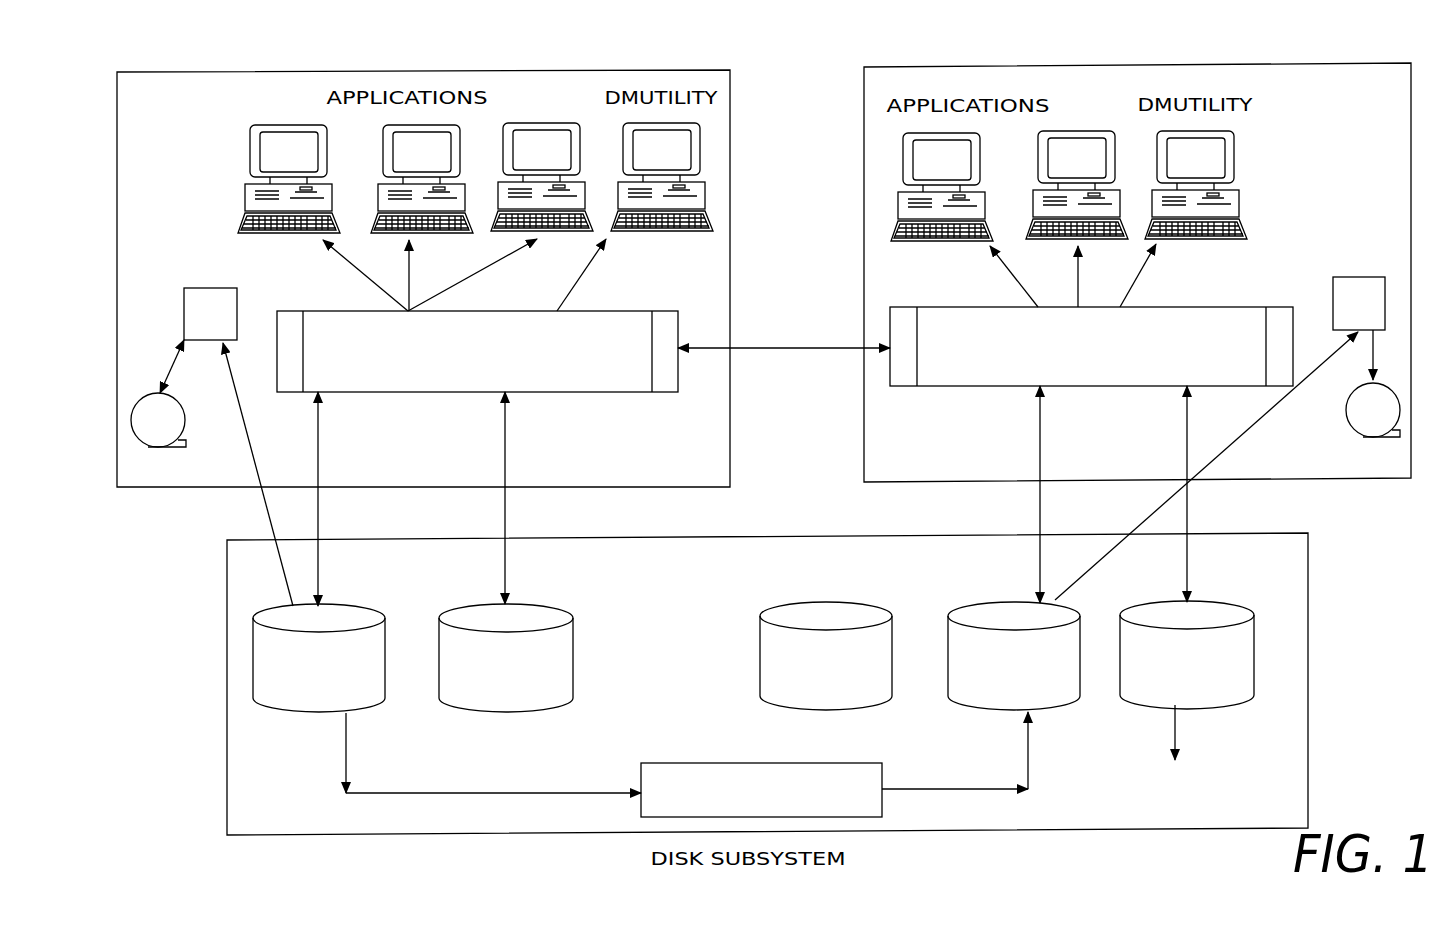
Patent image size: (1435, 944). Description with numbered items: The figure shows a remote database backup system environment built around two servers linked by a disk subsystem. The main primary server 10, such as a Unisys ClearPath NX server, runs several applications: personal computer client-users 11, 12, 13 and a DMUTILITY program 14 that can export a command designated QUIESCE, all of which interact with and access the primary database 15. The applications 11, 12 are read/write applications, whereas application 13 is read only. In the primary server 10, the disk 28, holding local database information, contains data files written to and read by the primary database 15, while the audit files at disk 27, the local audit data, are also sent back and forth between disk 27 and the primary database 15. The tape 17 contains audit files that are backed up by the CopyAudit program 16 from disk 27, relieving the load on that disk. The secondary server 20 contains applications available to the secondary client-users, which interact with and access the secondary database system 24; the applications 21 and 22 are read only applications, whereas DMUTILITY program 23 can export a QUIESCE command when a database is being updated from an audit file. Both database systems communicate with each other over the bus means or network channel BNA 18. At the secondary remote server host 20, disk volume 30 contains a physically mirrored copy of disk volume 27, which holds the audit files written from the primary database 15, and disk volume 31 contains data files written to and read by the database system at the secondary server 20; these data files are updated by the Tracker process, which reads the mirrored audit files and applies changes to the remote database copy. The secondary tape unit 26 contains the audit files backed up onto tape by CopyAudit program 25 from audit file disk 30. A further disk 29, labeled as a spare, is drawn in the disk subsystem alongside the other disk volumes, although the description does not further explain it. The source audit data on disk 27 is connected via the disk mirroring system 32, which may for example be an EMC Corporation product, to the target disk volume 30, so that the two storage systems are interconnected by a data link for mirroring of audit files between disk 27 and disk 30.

The main primary server 10 is at (610, 69).
The personal computer client-user 11 is at (263, 125).
The personal computer client-user 12 is at (383, 150).
The personal computer client-user 13 is at (543, 123).
The DMUTILITY program 14 is at (625, 150).
The primary database 15 is at (612, 310).
The CopyAudit program 16 is at (238, 298).
The tape 17 is at (185, 420).
The network channel BNA 18 is at (838, 348).
The secondary server 20 is at (1265, 64).
The read only application 21 is at (982, 160).
The read only application 22 is at (1062, 130).
The DMUTILITY program 23 is at (1238, 143).
The secondary database system 24 is at (1200, 305).
The CopyAudit program 25 is at (1333, 303).
The secondary tape unit 26 is at (1348, 398).
The disk 27 is at (372, 605).
The disk 28 is at (547, 603).
The spare disk SPARE 1 29 is at (840, 602).
The disk volume 30 is at (998, 598).
The disk volume 31 is at (1213, 598).
The disk mirroring system 32 is at (682, 763).